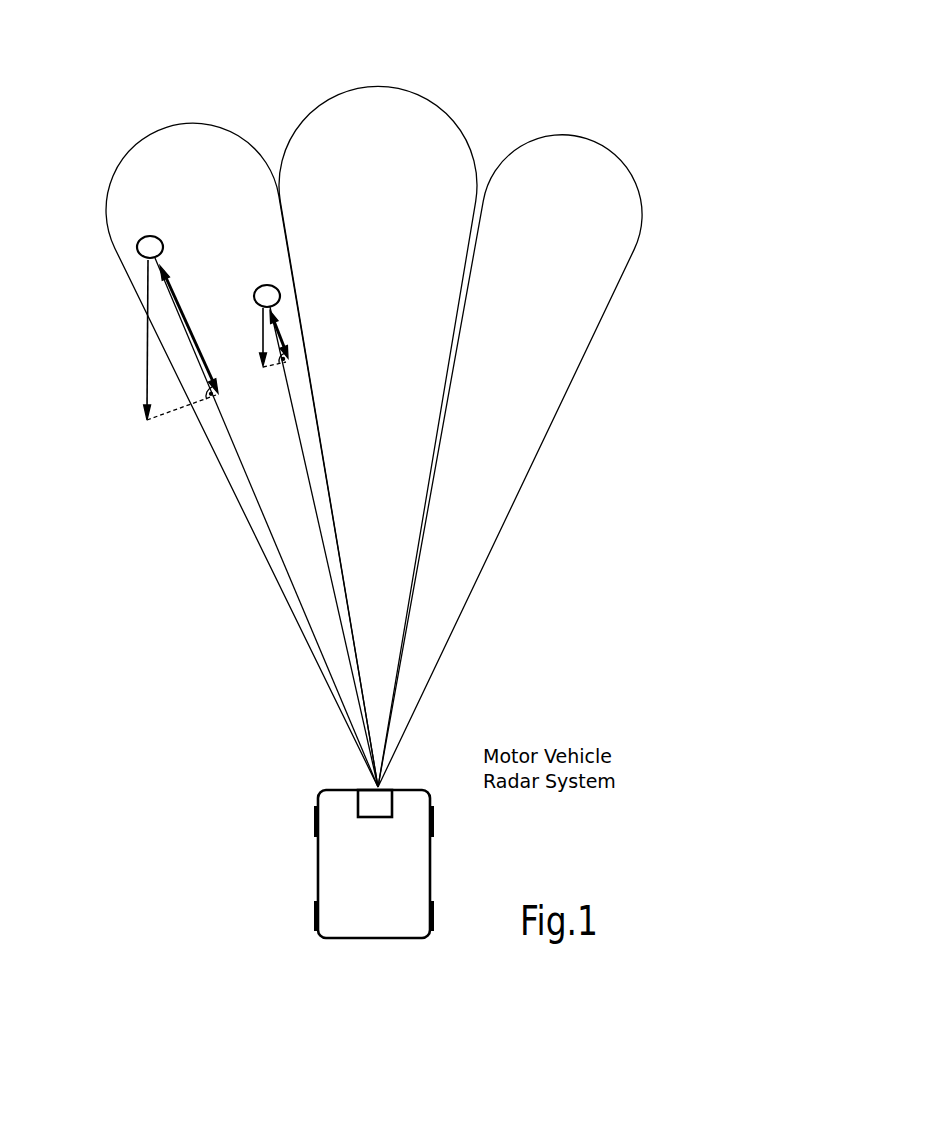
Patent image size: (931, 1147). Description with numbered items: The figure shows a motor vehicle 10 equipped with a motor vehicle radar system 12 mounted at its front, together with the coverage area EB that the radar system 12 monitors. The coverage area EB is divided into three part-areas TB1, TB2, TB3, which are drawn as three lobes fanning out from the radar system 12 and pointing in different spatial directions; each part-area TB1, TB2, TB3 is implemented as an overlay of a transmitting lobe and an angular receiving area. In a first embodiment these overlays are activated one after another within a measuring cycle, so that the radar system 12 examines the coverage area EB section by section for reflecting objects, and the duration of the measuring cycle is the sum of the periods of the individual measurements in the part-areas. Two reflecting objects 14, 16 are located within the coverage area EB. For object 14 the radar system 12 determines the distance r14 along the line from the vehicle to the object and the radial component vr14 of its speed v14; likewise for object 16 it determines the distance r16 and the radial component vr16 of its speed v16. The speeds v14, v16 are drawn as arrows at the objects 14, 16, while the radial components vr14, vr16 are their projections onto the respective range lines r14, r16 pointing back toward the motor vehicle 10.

The motor vehicle 10 is at (280, 873).
The motor vehicle radar system 12 is at (382, 785).
The object 14 is at (147, 235).
The object 16 is at (265, 284).
The part-area TB1 is at (242, 399).
The part-area TB2 is at (442, 401).
The part-area TB3 is at (580, 425).
The coverage area EB is at (633, 410).
The speed v14 is at (143, 365).
The radial component vr14 is at (188, 304).
The distance r14 is at (225, 418).
The speed v16 is at (260, 342).
The radial component vr16 is at (288, 338).
The distance r16 is at (312, 502).